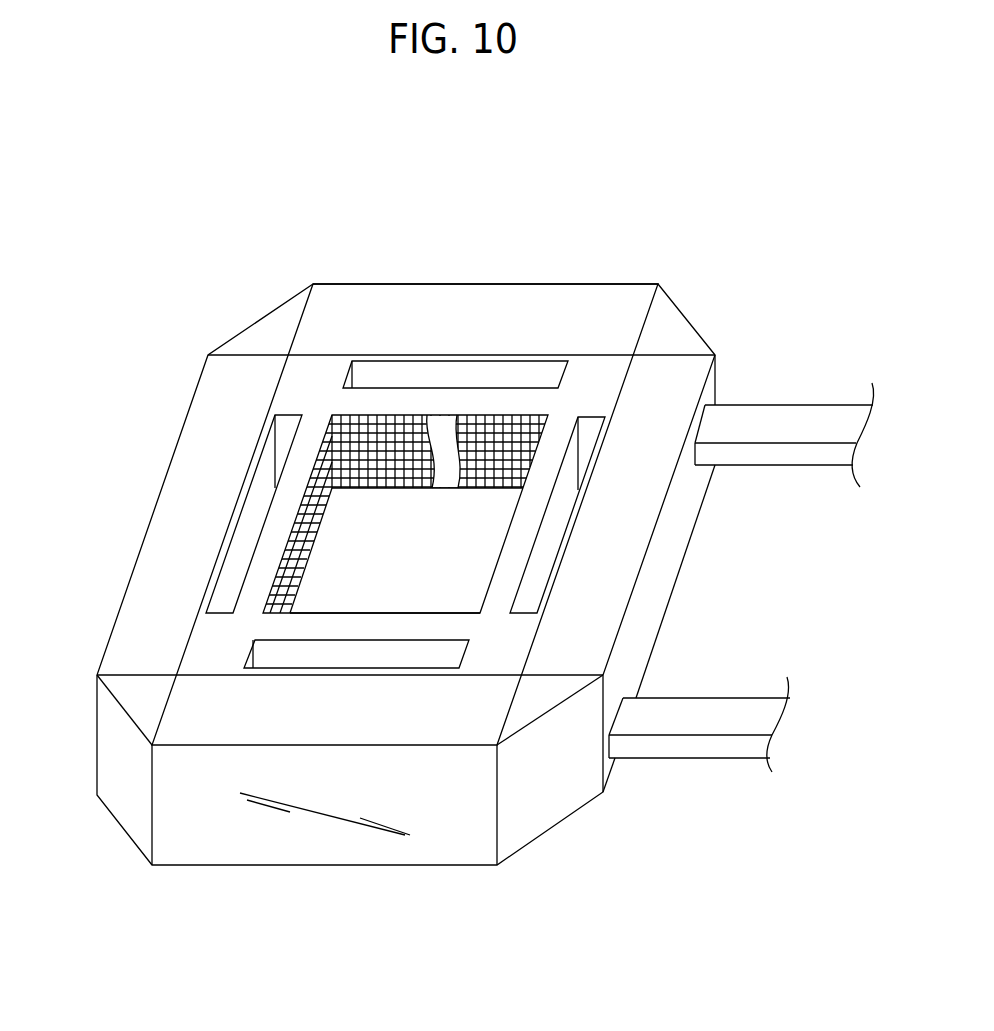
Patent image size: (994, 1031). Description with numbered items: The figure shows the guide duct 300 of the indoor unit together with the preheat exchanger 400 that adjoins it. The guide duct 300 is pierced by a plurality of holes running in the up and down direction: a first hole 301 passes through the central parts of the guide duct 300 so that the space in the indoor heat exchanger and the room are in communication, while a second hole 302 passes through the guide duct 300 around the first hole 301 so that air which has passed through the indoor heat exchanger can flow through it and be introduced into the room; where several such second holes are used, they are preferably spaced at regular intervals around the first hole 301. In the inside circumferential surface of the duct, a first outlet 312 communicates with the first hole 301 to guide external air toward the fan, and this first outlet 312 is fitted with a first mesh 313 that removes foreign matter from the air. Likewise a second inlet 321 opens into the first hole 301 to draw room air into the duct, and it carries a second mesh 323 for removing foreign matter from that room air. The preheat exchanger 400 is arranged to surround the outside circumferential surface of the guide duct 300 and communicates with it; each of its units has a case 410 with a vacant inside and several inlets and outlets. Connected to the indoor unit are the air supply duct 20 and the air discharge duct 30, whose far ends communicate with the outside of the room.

The preheat exchanger 400 is at (555, 276).
The case 410 is at (474, 297).
The guide duct 300 is at (431, 405).
The first mesh 313 is at (376, 433).
The first outlet 312 is at (447, 422).
The second inlet 321 is at (442, 480).
The second mesh 323 is at (366, 470).
The first hole 301 is at (455, 588).
The second hole 302 is at (232, 582).
The air discharge duct 30 is at (789, 412).
The air supply duct 20 is at (723, 705).